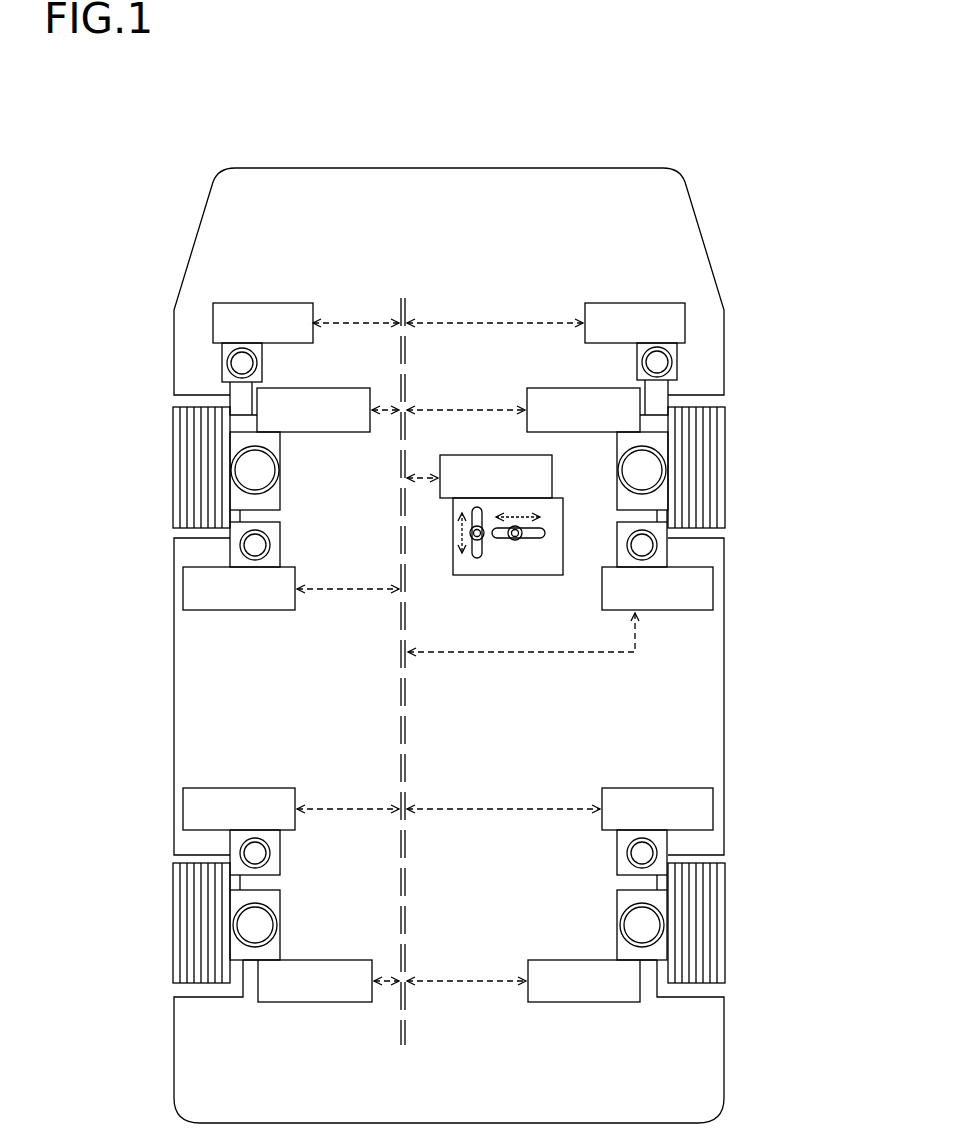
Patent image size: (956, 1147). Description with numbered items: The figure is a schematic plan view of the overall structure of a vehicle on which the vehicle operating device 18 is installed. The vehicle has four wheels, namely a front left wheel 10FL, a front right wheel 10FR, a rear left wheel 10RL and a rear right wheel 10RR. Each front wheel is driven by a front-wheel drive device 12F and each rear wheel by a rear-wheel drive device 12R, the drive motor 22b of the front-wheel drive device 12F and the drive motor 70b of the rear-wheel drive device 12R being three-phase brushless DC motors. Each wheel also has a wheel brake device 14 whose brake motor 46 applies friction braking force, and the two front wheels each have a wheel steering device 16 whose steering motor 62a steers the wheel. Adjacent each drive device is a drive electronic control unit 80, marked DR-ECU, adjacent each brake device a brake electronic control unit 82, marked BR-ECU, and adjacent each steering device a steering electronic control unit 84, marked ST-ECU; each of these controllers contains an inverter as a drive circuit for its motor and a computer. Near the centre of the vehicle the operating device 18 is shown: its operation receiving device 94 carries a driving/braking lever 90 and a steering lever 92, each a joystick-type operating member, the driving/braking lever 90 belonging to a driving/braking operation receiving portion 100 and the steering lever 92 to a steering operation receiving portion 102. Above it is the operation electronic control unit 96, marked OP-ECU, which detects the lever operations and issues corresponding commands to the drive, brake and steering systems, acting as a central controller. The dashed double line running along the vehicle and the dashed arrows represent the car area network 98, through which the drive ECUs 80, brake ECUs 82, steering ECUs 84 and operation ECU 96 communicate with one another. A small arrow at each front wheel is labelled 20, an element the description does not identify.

The front left wheel 10FL is at (180, 478).
The front right wheel 10FR is at (718, 478).
The rear left wheel 10RL is at (178, 968).
The rear right wheel 10RR is at (718, 947).
The front-wheel drive device 12F is at (237, 440).
The rear-wheel drive device 12R is at (233, 900).
The wheel brake device 14 is at (232, 556).
The wheel steering device 16 is at (224, 378).
The vehicle operating device 18 is at (509, 575).
The tire 20 is at (208, 507).
The drive motor 22b is at (278, 470).
The brake motor 46 is at (283, 546).
The steering motor 62a is at (226, 362).
The drive motor 70b is at (278, 926).
The drive electronic control unit 80 is at (272, 392).
The brake electronic control unit 82 is at (205, 612).
The steering electronic control unit 84 is at (249, 306).
The driving/braking lever 90 is at (488, 542).
The steering lever 92 is at (520, 542).
The operation receiving device 94 is at (512, 587).
The operation electronic control unit 96 is at (455, 460).
The car area network 98 is at (406, 851).
The driving/braking operation receiving portion 100 is at (482, 562).
The steering operation receiving portion 102 is at (550, 550).